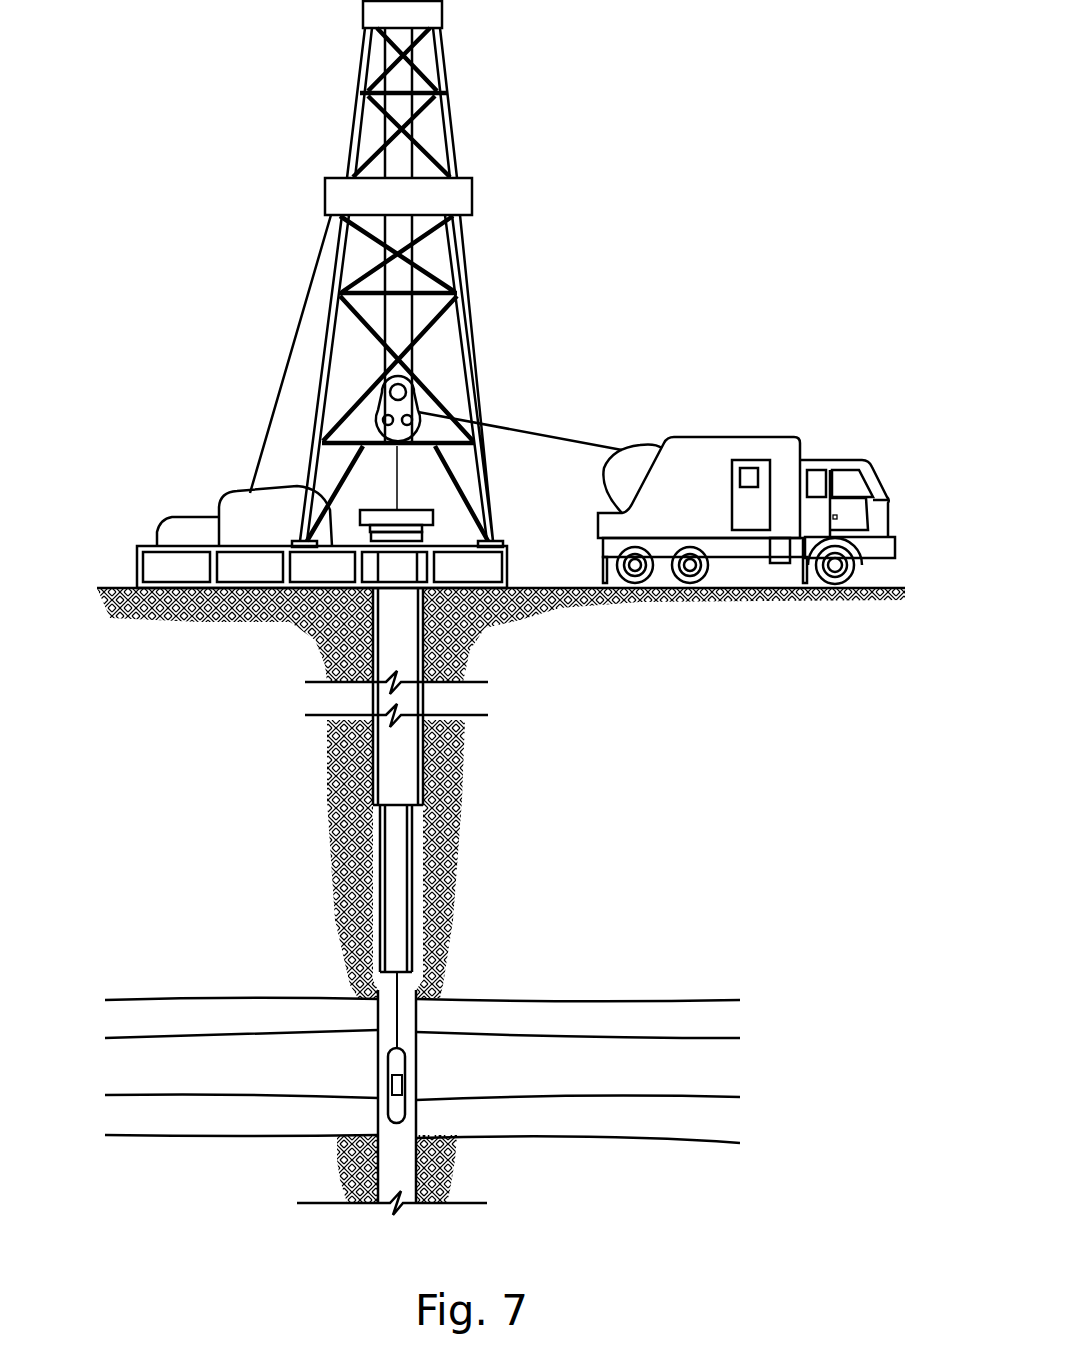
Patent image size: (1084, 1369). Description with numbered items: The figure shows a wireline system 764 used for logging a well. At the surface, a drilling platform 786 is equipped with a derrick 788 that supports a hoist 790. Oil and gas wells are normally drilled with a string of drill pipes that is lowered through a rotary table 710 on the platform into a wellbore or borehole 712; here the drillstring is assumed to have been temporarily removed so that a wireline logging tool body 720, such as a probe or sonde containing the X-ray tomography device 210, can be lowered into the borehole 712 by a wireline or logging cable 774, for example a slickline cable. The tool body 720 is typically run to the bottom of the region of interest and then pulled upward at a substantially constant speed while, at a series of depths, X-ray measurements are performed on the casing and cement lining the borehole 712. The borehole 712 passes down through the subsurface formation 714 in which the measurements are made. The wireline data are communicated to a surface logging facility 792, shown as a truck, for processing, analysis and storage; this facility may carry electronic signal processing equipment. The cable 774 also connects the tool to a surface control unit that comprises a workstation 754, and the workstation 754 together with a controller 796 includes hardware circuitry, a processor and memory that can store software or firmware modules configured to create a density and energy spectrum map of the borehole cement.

The wireline system 764 is at (684, 200).
The hoist 790 is at (413, 380).
The wireline cable 774 is at (527, 428).
The rotary table 710 is at (433, 507).
The derrick 788 is at (493, 528).
The drilling platform 786 is at (508, 578).
The surface logging facility 792 is at (693, 437).
The controller 796 is at (750, 467).
The workstation 754 is at (730, 505).
The borehole 712 is at (378, 1068).
The subterranean formation 714 is at (755, 990).
The wireline logging tool body 720 is at (405, 1063).
The X-ray tomography device 210 is at (398, 1087).